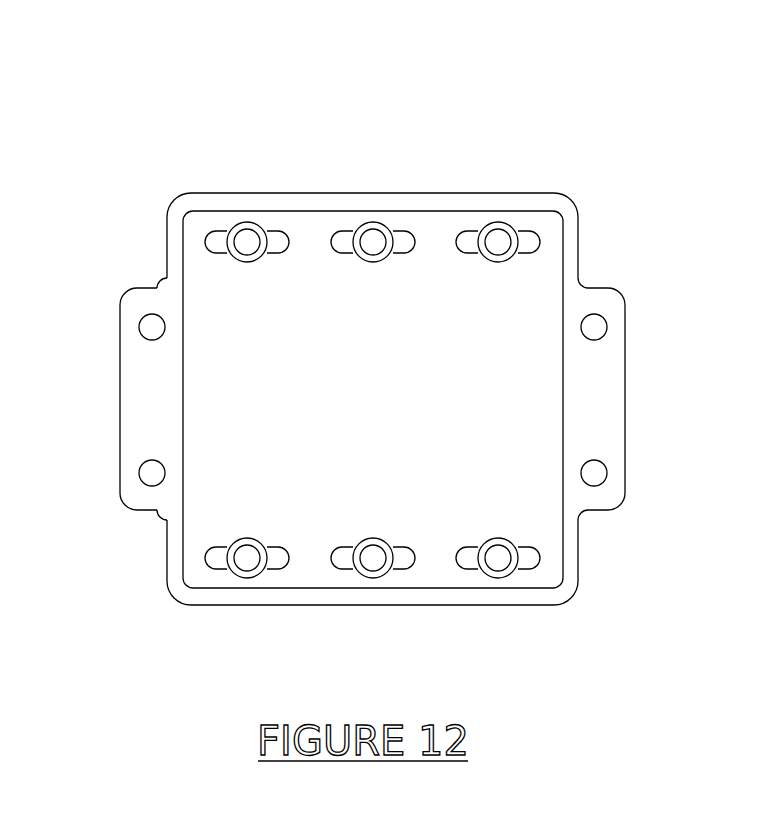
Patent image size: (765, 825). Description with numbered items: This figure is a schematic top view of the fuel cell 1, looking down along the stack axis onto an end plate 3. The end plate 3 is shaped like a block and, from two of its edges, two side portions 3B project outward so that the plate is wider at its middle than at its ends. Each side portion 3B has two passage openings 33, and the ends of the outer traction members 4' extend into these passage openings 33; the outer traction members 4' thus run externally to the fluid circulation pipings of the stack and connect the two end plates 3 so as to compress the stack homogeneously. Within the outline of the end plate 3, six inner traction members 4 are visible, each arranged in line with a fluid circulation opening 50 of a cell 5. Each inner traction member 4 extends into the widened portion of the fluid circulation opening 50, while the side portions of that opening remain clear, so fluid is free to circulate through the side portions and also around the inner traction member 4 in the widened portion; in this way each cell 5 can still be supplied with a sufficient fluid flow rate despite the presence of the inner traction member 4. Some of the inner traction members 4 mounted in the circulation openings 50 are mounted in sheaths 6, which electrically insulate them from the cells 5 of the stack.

The fuel cell 1 is at (131, 99).
The end plate 3 is at (576, 196).
The side portion 3B is at (119, 386).
The inner traction member 4 is at (331, 405).
The outer traction member 4' is at (373, 378).
The cell 5 is at (176, 210).
The sheath 6 is at (266, 235).
The passage opening 33 is at (153, 308).
The fluid circulation opening 50 is at (240, 222).